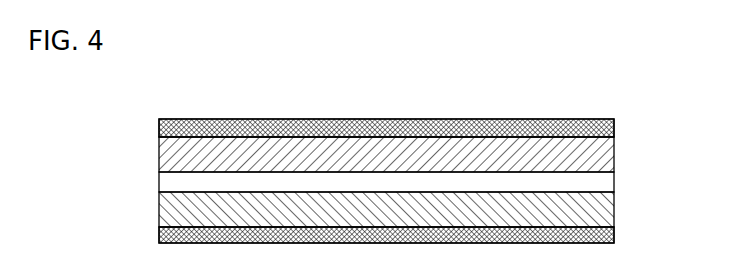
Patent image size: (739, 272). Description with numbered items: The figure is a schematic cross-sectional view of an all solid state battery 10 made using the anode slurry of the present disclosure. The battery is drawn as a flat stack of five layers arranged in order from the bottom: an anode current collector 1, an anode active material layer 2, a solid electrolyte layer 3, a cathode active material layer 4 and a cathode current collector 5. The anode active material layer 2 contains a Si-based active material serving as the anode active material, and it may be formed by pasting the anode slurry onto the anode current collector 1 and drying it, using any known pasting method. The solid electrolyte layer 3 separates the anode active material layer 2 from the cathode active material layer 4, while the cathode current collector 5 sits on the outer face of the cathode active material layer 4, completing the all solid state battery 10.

The all solid state battery 10 is at (616, 75).
The cathode current collector 5 is at (614, 127).
The cathode active material layer 4 is at (614, 160).
The solid electrolyte layer 3 is at (614, 184).
The anode active material layer 2 is at (614, 217).
The anode current collector 1 is at (614, 237).